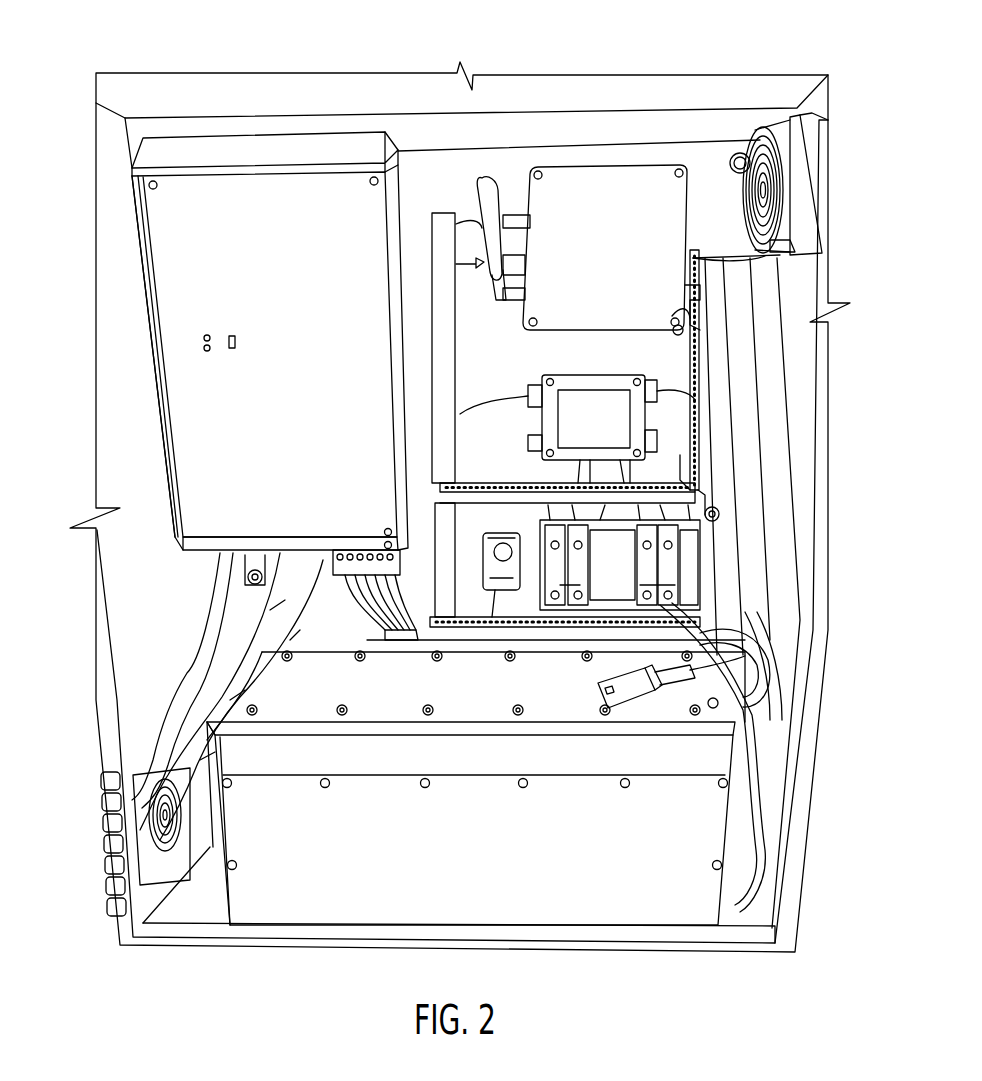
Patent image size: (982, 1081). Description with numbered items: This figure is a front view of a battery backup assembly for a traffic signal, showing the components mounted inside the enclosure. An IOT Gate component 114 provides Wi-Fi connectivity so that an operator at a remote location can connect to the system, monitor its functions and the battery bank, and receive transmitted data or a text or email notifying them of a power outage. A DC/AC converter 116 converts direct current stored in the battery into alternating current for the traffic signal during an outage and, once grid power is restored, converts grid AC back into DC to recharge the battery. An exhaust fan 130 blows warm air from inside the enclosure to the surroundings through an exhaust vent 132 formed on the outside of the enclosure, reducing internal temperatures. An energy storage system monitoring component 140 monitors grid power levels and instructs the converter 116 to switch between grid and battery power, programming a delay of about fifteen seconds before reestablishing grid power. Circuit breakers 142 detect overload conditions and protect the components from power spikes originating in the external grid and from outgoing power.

The IOT Gate component 114 is at (597, 240).
The DC/AC converter 116 is at (190, 410).
The exhaust fan 130 is at (800, 198).
The exhaust vent 132 is at (640, 855).
The energy storage system monitoring component 140 is at (593, 418).
The circuit breakers 142 is at (693, 543).